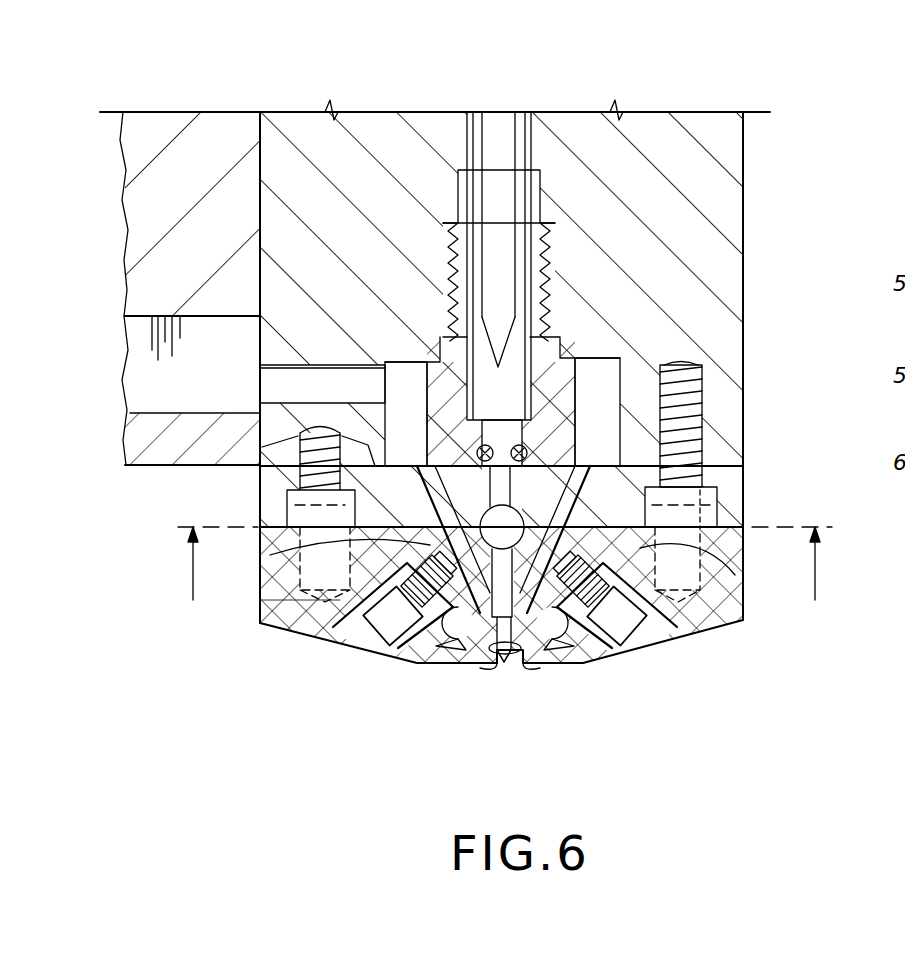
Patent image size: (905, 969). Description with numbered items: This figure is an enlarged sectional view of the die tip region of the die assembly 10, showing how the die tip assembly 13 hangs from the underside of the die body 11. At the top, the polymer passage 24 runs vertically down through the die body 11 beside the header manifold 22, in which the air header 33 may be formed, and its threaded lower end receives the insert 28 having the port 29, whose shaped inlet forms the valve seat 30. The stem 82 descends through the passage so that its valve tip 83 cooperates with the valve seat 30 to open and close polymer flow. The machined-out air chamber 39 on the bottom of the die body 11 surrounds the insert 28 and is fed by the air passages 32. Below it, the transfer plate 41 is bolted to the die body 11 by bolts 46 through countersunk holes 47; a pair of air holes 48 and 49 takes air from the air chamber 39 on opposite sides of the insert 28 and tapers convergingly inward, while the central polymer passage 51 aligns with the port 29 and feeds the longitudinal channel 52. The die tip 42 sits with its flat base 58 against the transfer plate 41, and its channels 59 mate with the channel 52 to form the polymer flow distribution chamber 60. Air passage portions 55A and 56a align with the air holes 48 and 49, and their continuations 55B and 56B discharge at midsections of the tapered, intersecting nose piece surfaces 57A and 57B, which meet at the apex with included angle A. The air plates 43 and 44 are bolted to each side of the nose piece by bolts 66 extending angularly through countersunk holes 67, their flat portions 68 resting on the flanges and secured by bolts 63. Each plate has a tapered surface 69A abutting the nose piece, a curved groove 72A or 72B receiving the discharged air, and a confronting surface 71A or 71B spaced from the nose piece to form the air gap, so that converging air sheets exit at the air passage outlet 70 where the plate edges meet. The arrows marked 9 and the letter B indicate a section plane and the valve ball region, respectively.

The die assembly 10 is at (748, 200).
The die body 11 is at (703, 160).
The die tip assembly 13 is at (806, 688).
The header manifold 22 is at (197, 148).
The polymer passage 24 is at (524, 128).
The insert 28 is at (565, 352).
The port 29 is at (430, 350).
The valve seat 30 is at (555, 367).
The air passages 32 is at (298, 368).
The header 33 is at (210, 380).
The air chamber 39 is at (400, 355).
The transfer plate 41 is at (720, 505).
The die tip 42 is at (305, 540).
The air plate 43 is at (335, 575).
The air plate 44 is at (723, 603).
The bolts 46 is at (707, 385).
The countersunk holes 47 is at (700, 480).
The air hole 48 is at (435, 500).
The air hole 49 is at (580, 520).
The central polymer passage 51 is at (450, 460).
The longitudinal channel 52 is at (475, 500).
The air passage portion 55A is at (295, 545).
The air passage portion 55B is at (460, 640).
The air passage portion 56a is at (700, 565).
The air passage portion 56B is at (588, 632).
The tapered surface 57A is at (437, 630).
The tapered surface 57B is at (625, 605).
The base 58 is at (707, 433).
The channels 59 is at (577, 460).
The polymer flow distribution chamber 60 is at (535, 455).
The bolts 63 is at (745, 520).
The bolts 66 is at (670, 640).
The countersunk holes 67 is at (655, 630).
The flat portion 68 is at (743, 513).
The tapered surface 69A is at (727, 627).
The air passage outlet 70 is at (514, 682).
The surface 71A is at (500, 667).
The surface 71B is at (522, 667).
The curved groove 72A is at (446, 648).
The curved groove 72B is at (563, 657).
The stem 82 is at (497, 152).
The valve tip 83 is at (500, 345).
The section line 9- 9 is at (504, 563).
The included angle A is at (510, 673).
The valve ball B is at (450, 532).